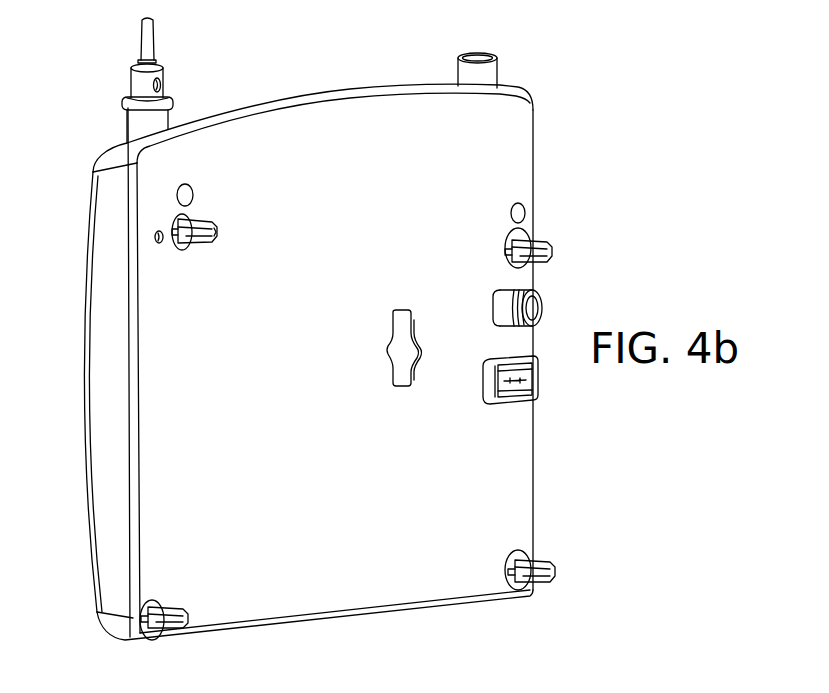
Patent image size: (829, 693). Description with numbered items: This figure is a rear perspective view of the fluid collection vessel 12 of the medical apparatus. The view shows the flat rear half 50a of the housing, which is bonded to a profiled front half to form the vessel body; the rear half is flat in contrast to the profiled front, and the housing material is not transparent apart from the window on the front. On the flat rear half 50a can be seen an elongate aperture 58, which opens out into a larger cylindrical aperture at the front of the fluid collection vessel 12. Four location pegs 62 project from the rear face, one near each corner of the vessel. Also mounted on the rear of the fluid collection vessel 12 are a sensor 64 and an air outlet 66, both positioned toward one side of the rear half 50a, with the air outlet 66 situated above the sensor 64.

The fluid collection vessel 12 is at (580, 67).
The flat rear half 50a is at (339, 190).
The location pegs 62 is at (218, 235).
The air outlet 66 is at (490, 304).
The sensor 64 is at (487, 404).
The elongate aperture 58 is at (390, 350).